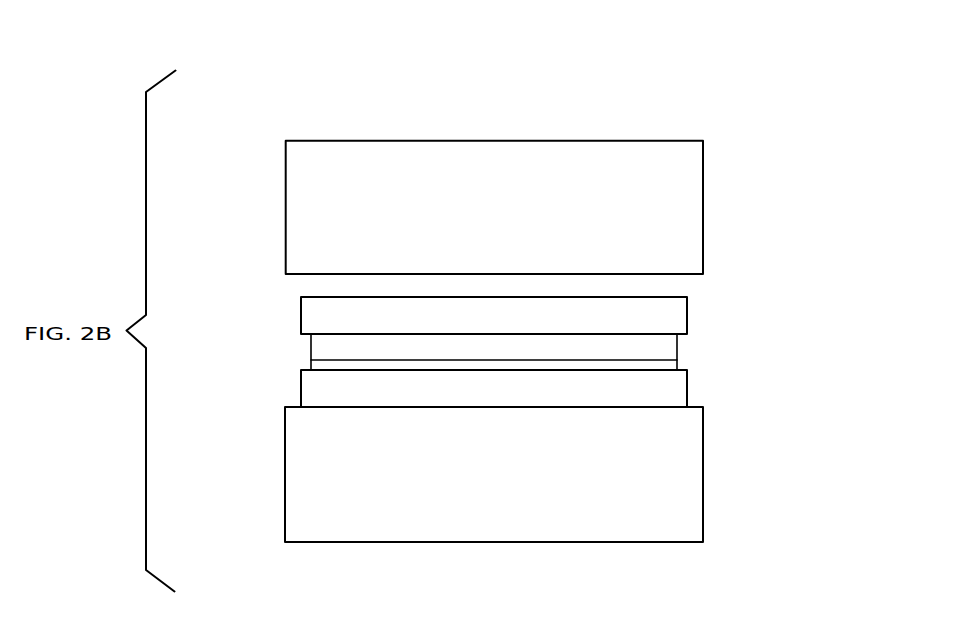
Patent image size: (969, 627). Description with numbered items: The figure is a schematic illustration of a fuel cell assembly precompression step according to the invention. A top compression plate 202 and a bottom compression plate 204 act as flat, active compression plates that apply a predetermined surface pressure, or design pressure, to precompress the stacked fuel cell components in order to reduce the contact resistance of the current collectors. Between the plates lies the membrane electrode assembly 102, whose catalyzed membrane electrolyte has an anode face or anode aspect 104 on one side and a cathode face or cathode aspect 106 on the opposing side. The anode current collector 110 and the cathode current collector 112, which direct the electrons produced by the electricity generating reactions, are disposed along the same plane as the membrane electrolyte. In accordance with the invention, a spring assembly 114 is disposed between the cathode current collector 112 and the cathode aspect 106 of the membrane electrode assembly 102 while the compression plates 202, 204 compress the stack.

The top compression plate 202 is at (700, 210).
The bottom compression plate 204 is at (699, 468).
The anode current collector 110 is at (688, 312).
The membrane electrode assembly 102 is at (678, 347).
The spring assembly 114 is at (678, 370).
The cathode current collector 112 is at (688, 398).
The anode aspect 104 is at (360, 334).
The cathode aspect 106 is at (398, 370).